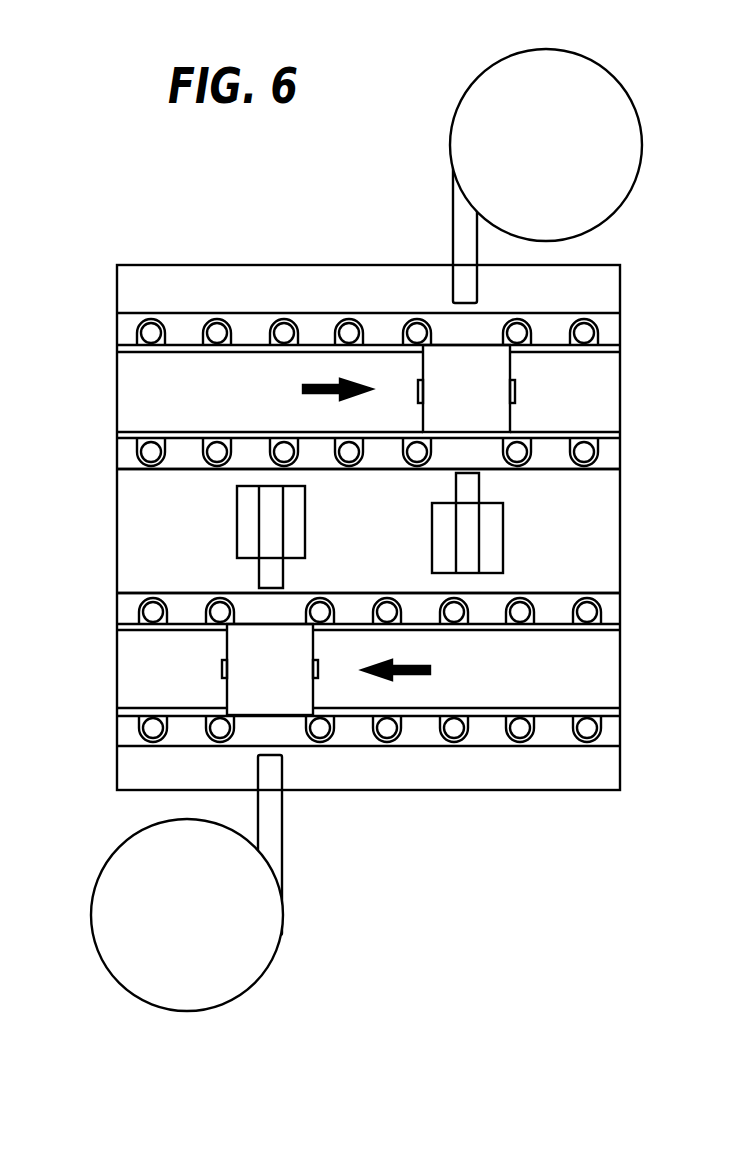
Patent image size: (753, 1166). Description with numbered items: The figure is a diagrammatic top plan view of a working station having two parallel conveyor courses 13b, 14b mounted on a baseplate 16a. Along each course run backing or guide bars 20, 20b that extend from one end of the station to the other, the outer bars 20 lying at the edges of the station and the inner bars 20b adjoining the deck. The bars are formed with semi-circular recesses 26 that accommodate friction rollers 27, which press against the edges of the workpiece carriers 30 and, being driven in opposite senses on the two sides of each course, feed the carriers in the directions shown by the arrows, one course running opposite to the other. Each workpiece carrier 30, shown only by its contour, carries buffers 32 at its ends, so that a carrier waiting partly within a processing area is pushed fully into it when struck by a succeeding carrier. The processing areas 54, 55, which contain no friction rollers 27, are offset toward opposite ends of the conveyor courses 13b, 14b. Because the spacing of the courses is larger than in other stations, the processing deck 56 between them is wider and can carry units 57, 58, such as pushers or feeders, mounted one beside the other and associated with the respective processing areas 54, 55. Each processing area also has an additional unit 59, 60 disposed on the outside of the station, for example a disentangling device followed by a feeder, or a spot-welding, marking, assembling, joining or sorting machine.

The conveyor course 13b is at (628, 366).
The conveyor course 14b is at (632, 672).
The baseplate 16a is at (593, 767).
The guide bar 20 is at (134, 332).
The guide bar 20b is at (126, 454).
The semi-circular recess 26 is at (207, 325).
The friction roller 27 is at (217, 330).
The workpiece carrier 30 is at (478, 412).
The buffer 32 is at (518, 390).
The processing area 54 is at (448, 323).
The processing area 55 is at (283, 729).
The processing deck 56 is at (582, 550).
The unit 57 is at (493, 522).
The unit 58 is at (245, 517).
The additional unit 59 is at (595, 128).
The additional unit 60 is at (233, 928).